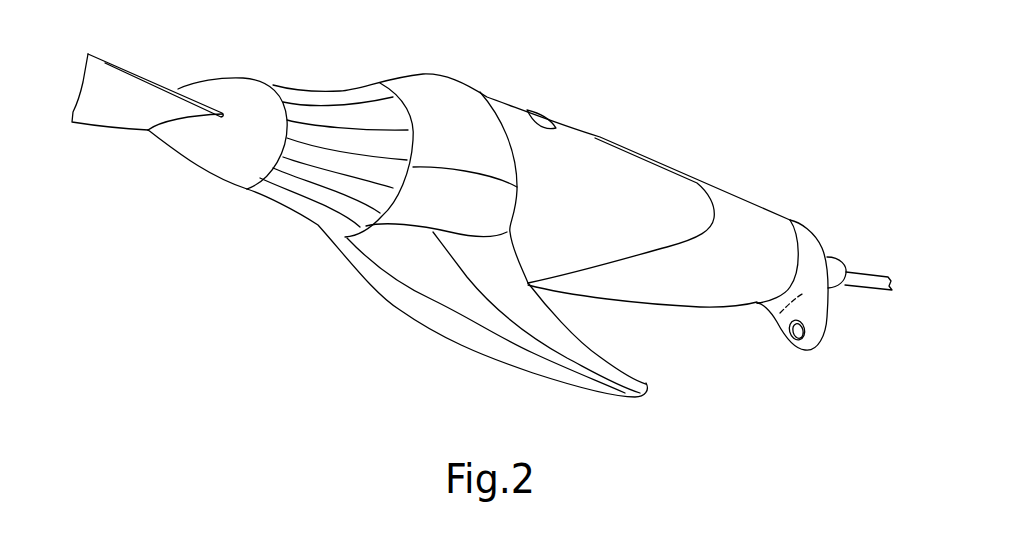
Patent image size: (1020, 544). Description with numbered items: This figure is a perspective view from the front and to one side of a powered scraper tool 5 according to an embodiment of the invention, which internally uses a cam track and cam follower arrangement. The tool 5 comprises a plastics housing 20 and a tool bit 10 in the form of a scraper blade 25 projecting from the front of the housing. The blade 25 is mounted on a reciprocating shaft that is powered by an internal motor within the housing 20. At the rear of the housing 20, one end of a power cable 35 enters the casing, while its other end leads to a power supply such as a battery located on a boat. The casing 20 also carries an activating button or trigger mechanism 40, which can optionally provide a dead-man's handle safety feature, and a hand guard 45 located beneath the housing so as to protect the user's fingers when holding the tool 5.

The tool 5 is at (628, 96).
The tool bit 10 is at (125, 85).
The plastics housing 20 is at (637, 150).
The scraper blade 25 is at (101, 115).
The power cable 35 is at (877, 278).
The activating button or trigger mechanism 40 is at (543, 122).
The hand guard 45 is at (507, 352).